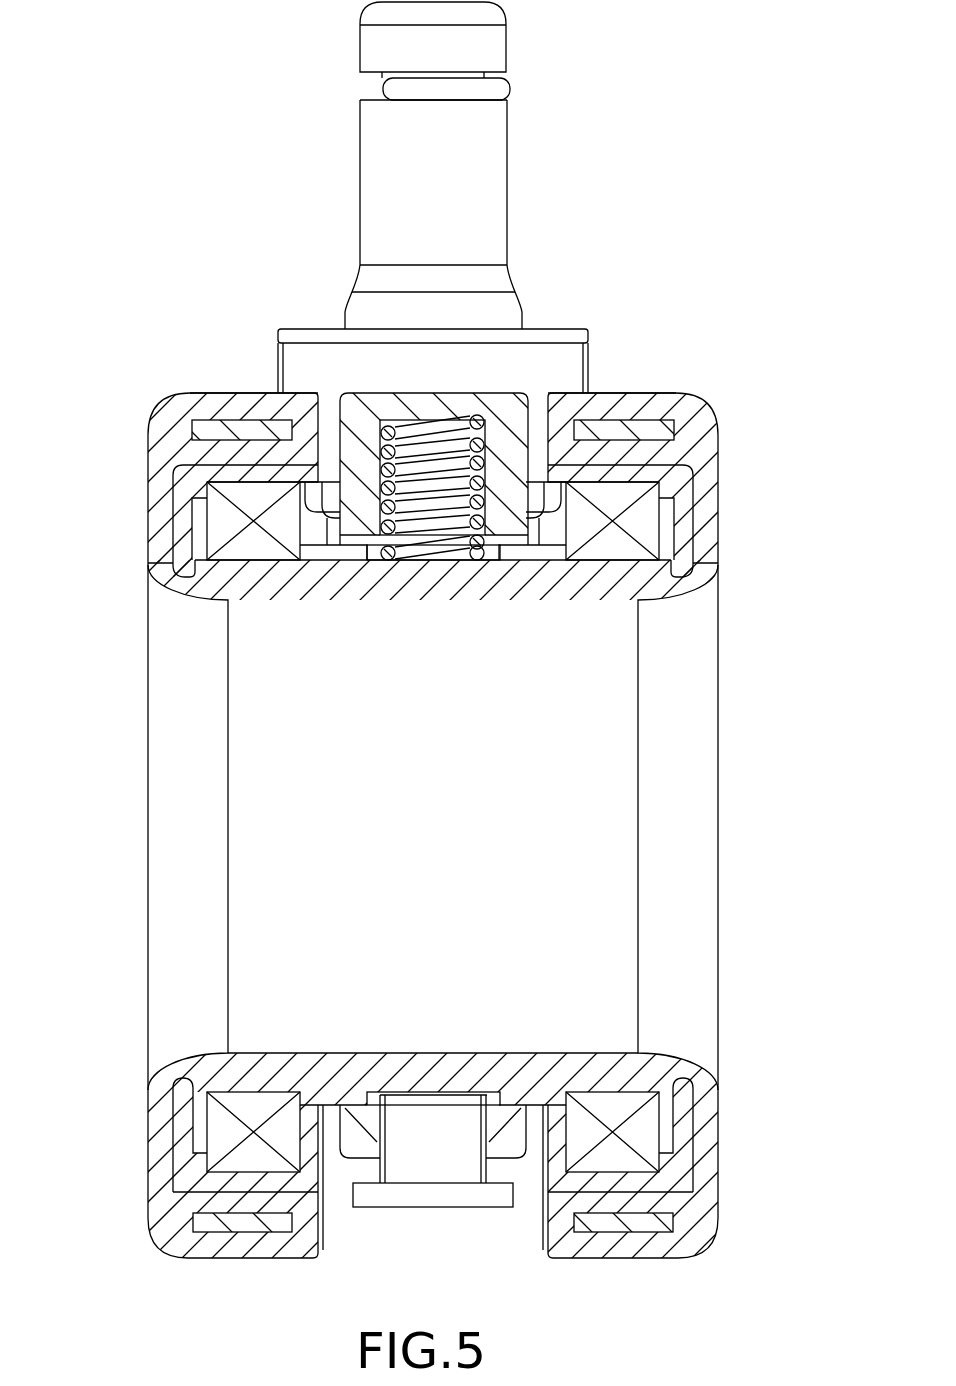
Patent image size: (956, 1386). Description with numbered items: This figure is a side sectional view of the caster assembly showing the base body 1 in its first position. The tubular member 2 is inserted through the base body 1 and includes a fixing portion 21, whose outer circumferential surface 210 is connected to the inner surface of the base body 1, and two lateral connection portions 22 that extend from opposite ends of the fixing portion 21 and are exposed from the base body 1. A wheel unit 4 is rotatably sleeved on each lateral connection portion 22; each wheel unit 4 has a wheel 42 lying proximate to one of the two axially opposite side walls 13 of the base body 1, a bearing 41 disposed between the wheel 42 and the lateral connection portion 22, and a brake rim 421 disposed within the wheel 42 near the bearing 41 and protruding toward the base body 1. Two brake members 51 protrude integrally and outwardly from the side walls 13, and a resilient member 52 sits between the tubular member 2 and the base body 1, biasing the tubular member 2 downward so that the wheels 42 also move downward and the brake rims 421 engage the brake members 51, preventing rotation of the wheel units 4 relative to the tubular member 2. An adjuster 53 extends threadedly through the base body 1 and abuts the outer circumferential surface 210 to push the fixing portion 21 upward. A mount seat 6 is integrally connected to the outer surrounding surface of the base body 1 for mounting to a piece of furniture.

The base body 1 is at (363, 420).
The side walls 13 is at (332, 482).
The tubular member 2 is at (692, 594).
The fixing portion 21 is at (328, 1110).
The outer circumferential surface 210 is at (433, 1179).
The lateral connection portions 22 is at (223, 1077).
The wheel units 4 is at (677, 392).
The bearing 41 is at (225, 515).
The wheel 42 is at (178, 423).
The brake rim 421 is at (310, 472).
The brake members 51 is at (325, 500).
The resilient member 52 is at (433, 440).
The adjuster 53 is at (478, 1195).
The mount seat 6 is at (413, 340).